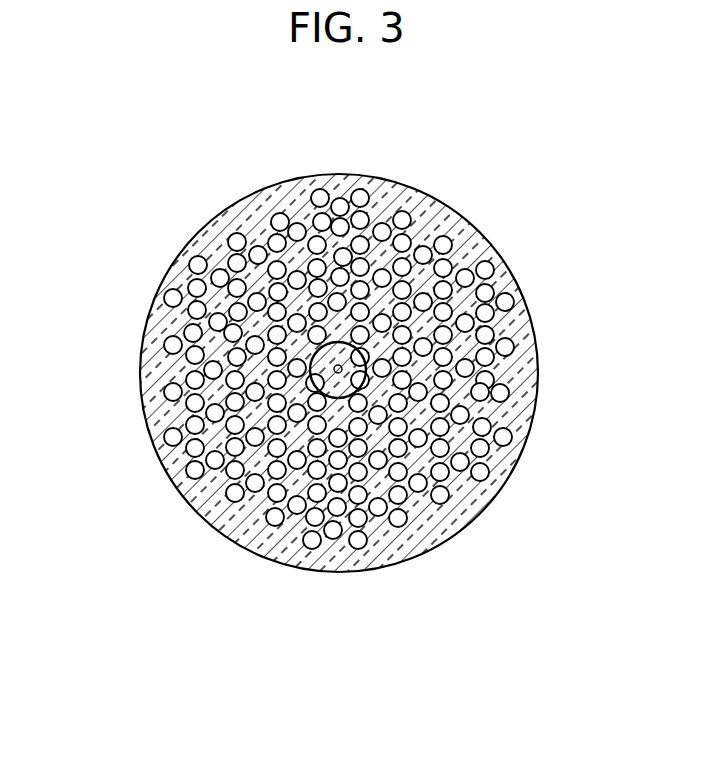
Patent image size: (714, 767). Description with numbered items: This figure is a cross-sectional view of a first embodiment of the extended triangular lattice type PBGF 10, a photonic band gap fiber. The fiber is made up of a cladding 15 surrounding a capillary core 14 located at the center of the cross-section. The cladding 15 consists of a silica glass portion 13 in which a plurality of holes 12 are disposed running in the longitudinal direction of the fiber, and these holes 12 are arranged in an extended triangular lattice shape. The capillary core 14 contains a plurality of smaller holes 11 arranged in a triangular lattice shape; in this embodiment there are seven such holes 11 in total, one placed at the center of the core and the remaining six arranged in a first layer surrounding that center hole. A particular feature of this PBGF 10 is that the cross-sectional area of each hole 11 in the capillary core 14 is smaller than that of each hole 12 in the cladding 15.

The extended triangular lattice type PBGF 10 is at (478, 220).
The holes 11 is at (392, 370).
The holes 12 is at (165, 391).
The silica glass portion 13 is at (468, 502).
The capillary core 14 is at (365, 353).
The cladding 15 is at (343, 262).